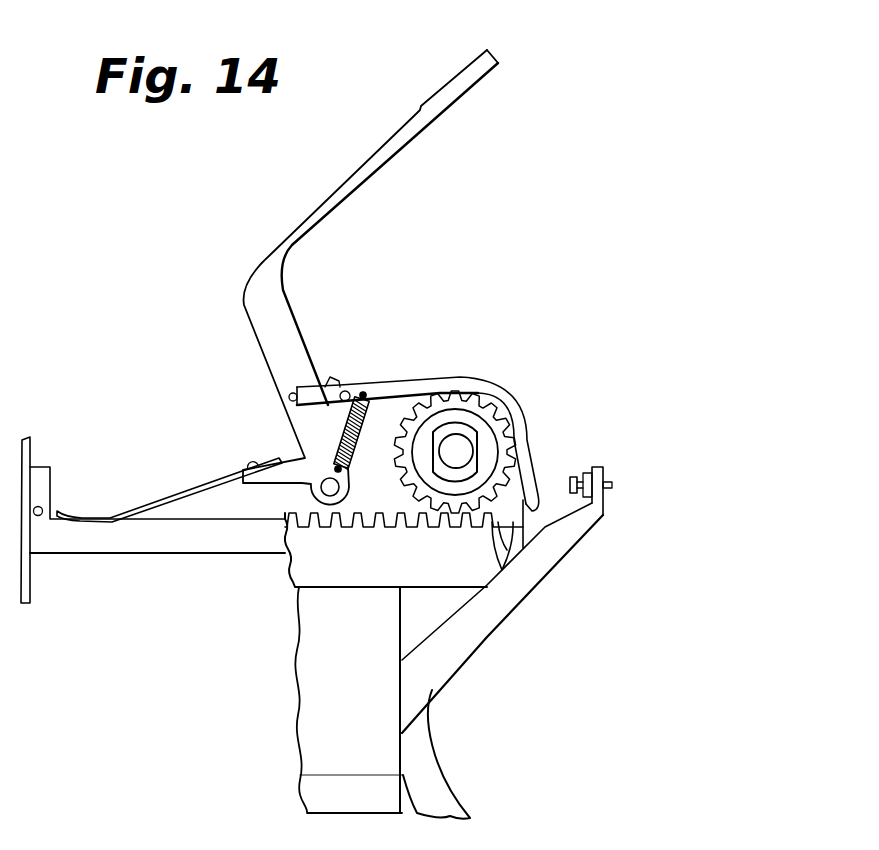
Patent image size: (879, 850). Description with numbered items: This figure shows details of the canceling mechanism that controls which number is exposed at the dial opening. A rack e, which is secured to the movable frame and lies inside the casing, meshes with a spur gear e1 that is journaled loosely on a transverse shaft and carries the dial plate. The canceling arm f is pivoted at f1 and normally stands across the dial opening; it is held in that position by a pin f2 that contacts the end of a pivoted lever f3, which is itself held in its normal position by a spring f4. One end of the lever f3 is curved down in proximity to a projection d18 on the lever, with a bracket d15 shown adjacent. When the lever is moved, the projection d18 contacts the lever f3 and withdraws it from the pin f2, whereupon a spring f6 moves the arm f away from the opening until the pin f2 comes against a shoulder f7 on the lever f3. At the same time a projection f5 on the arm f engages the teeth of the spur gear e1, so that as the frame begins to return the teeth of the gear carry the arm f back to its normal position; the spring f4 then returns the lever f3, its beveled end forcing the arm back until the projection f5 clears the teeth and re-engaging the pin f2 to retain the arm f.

The canceling arm f is at (370, 277).
The pivot of canceling arm f1 is at (322, 489).
The pin f2 is at (290, 398).
The pivoted lever f3 is at (366, 393).
The spring f4 is at (360, 440).
The projection f5 is at (342, 470).
The spring f6 is at (138, 500).
The shoulder f7 is at (333, 380).
The rack e is at (404, 543).
The spur gear e1 is at (498, 440).
The projection d18 is at (495, 547).
The bracket d15 is at (511, 610).